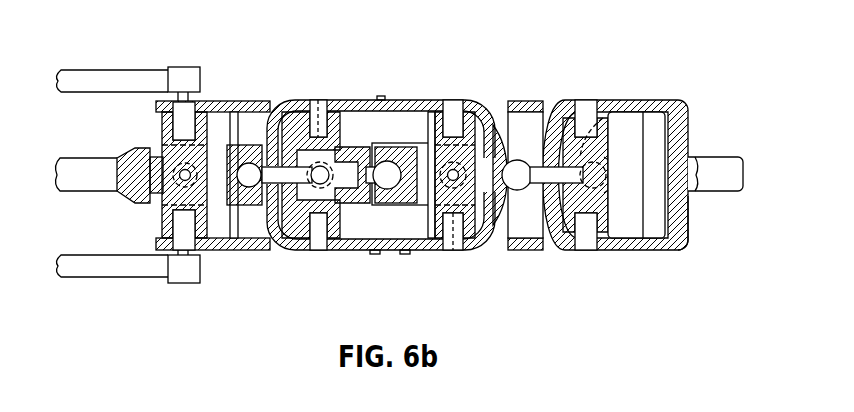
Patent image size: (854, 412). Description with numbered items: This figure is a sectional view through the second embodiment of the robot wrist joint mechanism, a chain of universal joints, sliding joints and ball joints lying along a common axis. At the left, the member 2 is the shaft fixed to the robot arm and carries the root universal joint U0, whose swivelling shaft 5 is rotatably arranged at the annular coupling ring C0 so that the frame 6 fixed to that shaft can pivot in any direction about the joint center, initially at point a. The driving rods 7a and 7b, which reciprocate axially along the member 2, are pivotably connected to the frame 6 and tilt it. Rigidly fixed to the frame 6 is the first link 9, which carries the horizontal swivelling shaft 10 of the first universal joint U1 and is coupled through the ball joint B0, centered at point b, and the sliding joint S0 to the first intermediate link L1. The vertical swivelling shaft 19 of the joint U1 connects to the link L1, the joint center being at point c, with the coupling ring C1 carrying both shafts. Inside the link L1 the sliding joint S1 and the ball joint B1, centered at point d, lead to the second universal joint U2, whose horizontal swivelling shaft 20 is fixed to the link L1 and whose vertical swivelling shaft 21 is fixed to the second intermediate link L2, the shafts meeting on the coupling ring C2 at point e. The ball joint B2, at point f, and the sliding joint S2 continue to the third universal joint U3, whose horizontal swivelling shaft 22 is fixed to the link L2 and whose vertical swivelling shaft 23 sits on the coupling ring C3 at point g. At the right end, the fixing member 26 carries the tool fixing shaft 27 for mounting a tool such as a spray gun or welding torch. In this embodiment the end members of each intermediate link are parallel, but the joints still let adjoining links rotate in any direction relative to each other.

The member 2 is at (72, 158).
The swivelling shaft 5 is at (188, 118).
The frame 6 is at (158, 196).
The driving rod 7a is at (96, 266).
The driving rod 7b is at (106, 70).
The first link 9 is at (247, 97).
The horizontal swivelling shaft 10 is at (318, 250).
The vertical swivelling shaft 19 is at (326, 248).
The horizontal swivelling shaft 20 is at (452, 104).
The vertical swivelling shaft 21 is at (456, 252).
The horizontal swivelling shaft 22 is at (616, 116).
The vertical swivelling shaft 23 is at (586, 106).
The fixing member 26 is at (687, 239).
The tool fixing shaft 27 is at (722, 157).
The annular coupling ring C0 is at (162, 129).
The coupling ring C1 is at (344, 112).
The coupling ring C2 is at (434, 120).
The coupling ring C3 is at (613, 124).
The universal joint U0 is at (217, 256).
The first universal joint U1 is at (361, 216).
The second universal joint U2 is at (506, 245).
The third universal joint U3 is at (626, 206).
The ball joint B0 is at (251, 190).
The ball joint B1 is at (400, 192).
The ball joint B2 is at (517, 160).
The sliding joint S0 is at (283, 250).
The common sliding joint S1 is at (371, 195).
The sliding joint S2 is at (578, 160).
The first intermediate link L1 is at (354, 91).
The second intermediate link L2 is at (487, 127).
The initial center position of universal joint U0 a is at (185, 175).
The initial center position of ball joint B0 b is at (249, 175).
The initial center position of first universal joint U1 c is at (320, 175).
The initial center position of ball joint B1 d is at (387, 175).
The initial center position of second universal joint U2 e is at (453, 175).
The initial center position of ball joint B2 f is at (517, 175).
The initial center position of third universal joint U3 g is at (597, 175).